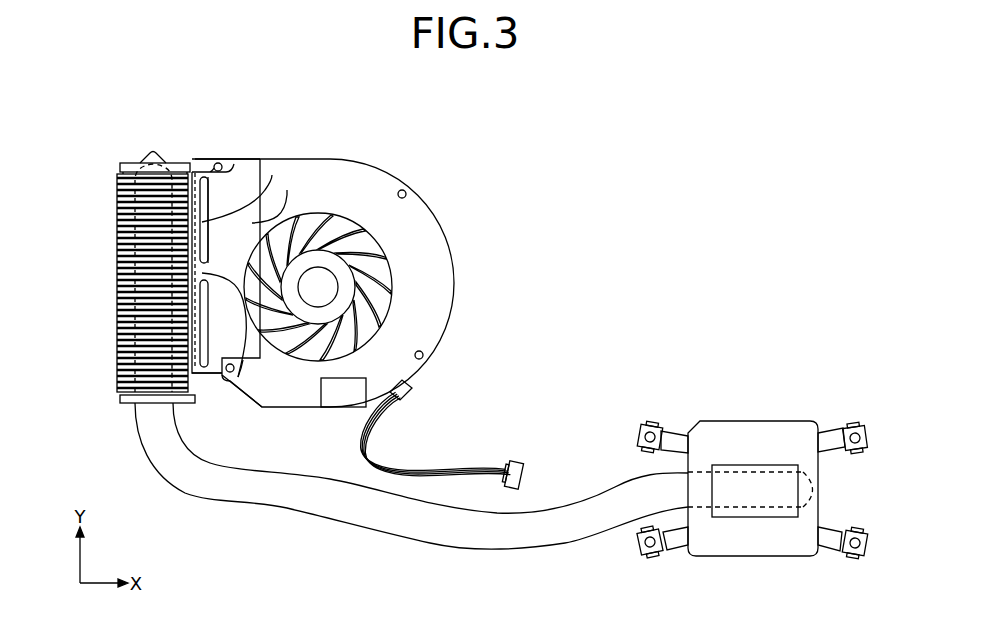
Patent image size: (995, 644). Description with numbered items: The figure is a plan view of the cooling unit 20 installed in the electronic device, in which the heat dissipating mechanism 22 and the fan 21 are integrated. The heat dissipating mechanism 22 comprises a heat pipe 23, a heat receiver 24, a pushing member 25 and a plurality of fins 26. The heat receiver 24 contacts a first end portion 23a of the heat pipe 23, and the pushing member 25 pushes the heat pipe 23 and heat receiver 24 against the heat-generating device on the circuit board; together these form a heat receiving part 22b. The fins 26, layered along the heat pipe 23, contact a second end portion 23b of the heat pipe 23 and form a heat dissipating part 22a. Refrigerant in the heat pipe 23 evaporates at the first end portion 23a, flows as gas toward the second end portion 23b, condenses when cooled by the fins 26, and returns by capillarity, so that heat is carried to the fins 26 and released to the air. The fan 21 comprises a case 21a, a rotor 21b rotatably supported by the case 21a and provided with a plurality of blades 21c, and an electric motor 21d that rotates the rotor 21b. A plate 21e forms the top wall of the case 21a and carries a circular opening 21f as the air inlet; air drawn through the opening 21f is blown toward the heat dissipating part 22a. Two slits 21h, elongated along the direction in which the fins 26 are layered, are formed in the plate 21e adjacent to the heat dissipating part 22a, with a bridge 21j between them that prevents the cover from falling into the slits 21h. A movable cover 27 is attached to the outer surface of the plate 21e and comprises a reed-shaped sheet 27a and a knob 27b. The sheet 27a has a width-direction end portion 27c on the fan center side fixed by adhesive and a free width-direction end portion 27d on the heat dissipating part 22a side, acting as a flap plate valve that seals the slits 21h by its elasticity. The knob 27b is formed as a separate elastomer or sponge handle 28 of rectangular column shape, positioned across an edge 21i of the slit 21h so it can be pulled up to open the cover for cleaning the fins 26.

The cooling unit 20 is at (686, 222).
The fan 21 is at (402, 176).
The case 21a is at (391, 283).
The rotor 21b is at (347, 273).
The blades 21c is at (392, 287).
The electric motor 21d is at (330, 322).
The plate 21e is at (440, 302).
The circular opening 21f is at (380, 323).
The slits 21h is at (164, 309).
The edge 21i is at (197, 157).
The bridge 21j is at (238, 377).
The heat dissipating mechanism 22 is at (287, 514).
The heat dissipating part 22a is at (110, 258).
The heat receiving part 22b is at (745, 378).
The heat pipe 23 is at (391, 541).
The first end portion 23a is at (822, 482).
The second end portion 23b is at (130, 217).
The heat receiver 24 is at (786, 430).
The pushing member 25 is at (678, 428).
The fins 26 is at (117, 188).
The movable cover 27 is at (250, 150).
The sheet 27a is at (241, 178).
The knob 27b is at (300, 238).
The width-direction end portion 27c is at (287, 190).
The width-direction end portion 27d is at (212, 380).
The handle 28 is at (272, 175).